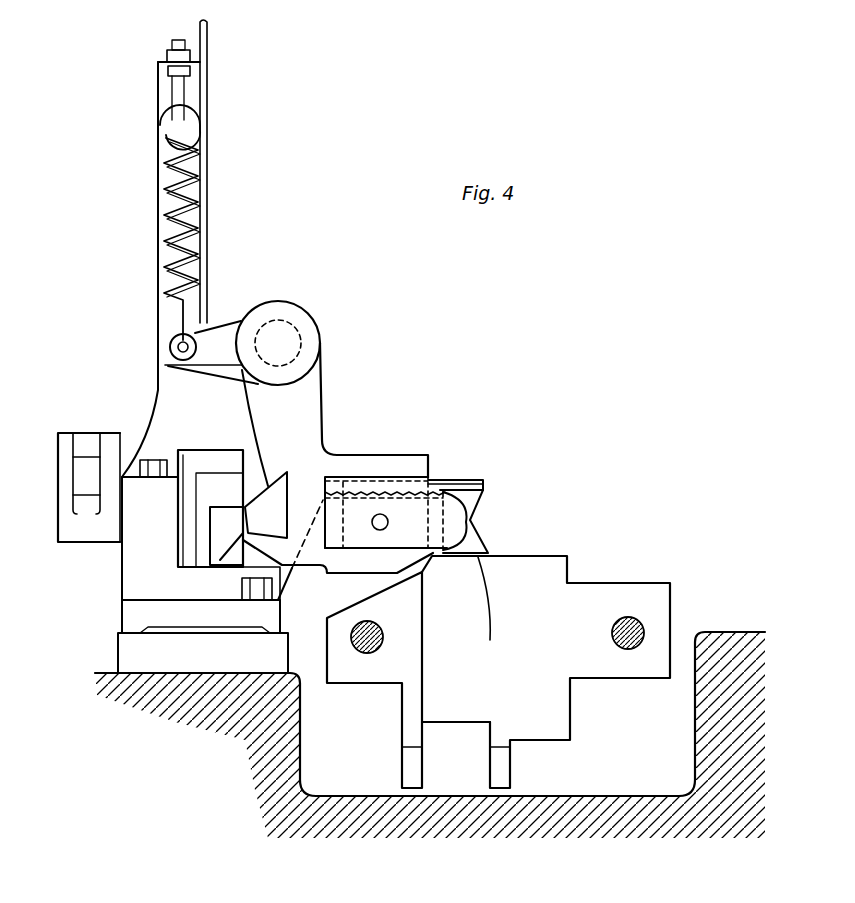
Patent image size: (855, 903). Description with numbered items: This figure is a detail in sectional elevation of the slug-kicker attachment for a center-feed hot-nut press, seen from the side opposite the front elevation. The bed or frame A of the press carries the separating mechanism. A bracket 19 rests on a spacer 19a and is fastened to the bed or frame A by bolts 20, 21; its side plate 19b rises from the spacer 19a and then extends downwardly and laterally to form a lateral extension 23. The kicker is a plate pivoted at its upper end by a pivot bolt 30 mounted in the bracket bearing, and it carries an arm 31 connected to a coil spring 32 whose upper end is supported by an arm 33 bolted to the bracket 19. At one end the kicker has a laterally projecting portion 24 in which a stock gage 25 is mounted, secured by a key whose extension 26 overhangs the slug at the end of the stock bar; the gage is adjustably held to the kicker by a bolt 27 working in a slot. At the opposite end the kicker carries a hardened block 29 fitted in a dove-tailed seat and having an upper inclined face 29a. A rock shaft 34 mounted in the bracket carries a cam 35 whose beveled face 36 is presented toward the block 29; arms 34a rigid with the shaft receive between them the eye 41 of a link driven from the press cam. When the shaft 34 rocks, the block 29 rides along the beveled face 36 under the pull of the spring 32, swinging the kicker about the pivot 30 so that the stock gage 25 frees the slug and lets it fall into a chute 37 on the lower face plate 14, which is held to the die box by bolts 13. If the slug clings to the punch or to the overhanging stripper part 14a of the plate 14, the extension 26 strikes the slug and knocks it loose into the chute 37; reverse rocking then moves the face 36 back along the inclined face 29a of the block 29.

The bed or frame A is at (456, 830).
The bolts 13 is at (372, 628).
The lower face plate 14 is at (549, 566).
The overhanging part 14a is at (470, 502).
The bracket 19 is at (122, 578).
The spacer 19a is at (203, 650).
The side plate 19b is at (163, 388).
The bolt 20 is at (158, 460).
The bolt 21 is at (242, 588).
The lateral extension 23 is at (433, 476).
The laterally projecting portion 24 is at (372, 458).
The stock gage 25 is at (452, 522).
The extension 26 is at (473, 480).
The bolt 27 is at (389, 522).
The hardened block 29 is at (266, 505).
The upper inclined face 29a is at (272, 474).
The pivot bolt 30 is at (292, 340).
The arm 31 is at (233, 322).
The coil spring 32 is at (165, 213).
The arm 33 is at (158, 62).
The rock shaft 34 is at (58, 520).
The arms 34a is at (100, 434).
The cam 35 is at (224, 477).
The beveled face 36 is at (234, 548).
The chute 37 is at (418, 672).
The eye 41 is at (85, 456).